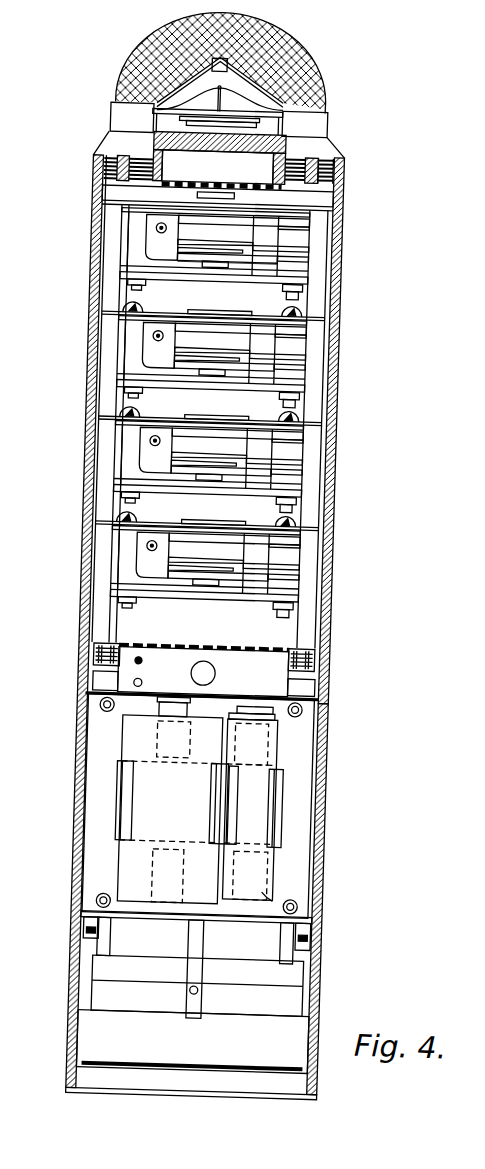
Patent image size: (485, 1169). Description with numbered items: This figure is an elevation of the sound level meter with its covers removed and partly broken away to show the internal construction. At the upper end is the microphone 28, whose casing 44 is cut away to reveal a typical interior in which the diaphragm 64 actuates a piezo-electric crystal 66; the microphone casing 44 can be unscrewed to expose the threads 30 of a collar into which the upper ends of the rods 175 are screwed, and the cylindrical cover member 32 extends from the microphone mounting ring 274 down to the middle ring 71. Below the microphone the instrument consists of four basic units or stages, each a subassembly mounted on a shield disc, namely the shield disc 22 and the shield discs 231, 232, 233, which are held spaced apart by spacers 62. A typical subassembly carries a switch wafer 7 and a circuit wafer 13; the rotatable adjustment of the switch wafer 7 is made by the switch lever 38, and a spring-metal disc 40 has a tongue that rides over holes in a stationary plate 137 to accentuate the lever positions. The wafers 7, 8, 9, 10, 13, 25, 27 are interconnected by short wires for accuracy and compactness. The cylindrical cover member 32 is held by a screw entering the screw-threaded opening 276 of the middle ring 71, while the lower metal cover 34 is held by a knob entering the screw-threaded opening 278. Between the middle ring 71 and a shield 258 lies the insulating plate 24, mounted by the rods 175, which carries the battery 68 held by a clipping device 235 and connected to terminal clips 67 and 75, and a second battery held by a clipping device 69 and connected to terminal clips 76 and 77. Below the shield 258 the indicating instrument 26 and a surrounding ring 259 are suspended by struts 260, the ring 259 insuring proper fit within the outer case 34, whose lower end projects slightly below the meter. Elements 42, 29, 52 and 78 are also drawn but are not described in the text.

The microphone 28 is at (292, 58).
The diaphragm 64 is at (228, 100).
The piezo-electric crystal 66 is at (142, 118).
The casing of the microphone 44 is at (315, 121).
The threads 30 is at (297, 165).
The microphone mounting ring 274 is at (331, 165).
The rods 175 is at (329, 182).
The shield disc 22 is at (92, 214).
The insulating block 42 is at (150, 143).
The switch wafer 7 is at (300, 215).
The wafer 8 is at (300, 322).
The wafer 9 is at (300, 428).
The wafer 10 is at (300, 533).
The switch lever 38 is at (139, 236).
The disc 40 is at (230, 246).
The plate 137 is at (266, 256).
The circuit wafer 13 is at (299, 280).
The wafer 25 is at (299, 385).
The wafer 27 is at (299, 490).
The base plate 29 is at (299, 596).
The shield disc 231 is at (104, 312).
The shield disc 232 is at (106, 418).
The shield disc 233 is at (108, 523).
The cylindrical cover member 32 is at (331, 352).
The spacers 62 is at (316, 460).
The terminal screw 52 is at (96, 658).
The terminal screw 78 is at (317, 657).
The screw-threaded opening 276 is at (144, 661).
The screw-threaded opening 278 is at (143, 682).
The middle ring 71 is at (318, 679).
The terminal clip 67 is at (177, 699).
The terminal clip 76 is at (262, 704).
The battery 68 is at (126, 737).
The clipping device 69 is at (282, 824).
The clipping device 235 is at (138, 806).
The insulating plate 24 is at (305, 792).
The metal cover 34 is at (328, 852).
The terminal clip 77 is at (281, 899).
The shield 258 is at (320, 914).
The terminal clip 75 is at (175, 920).
The struts 260 is at (292, 945).
The indicating instrument 26 is at (296, 995).
The ring 259 is at (92, 1040).